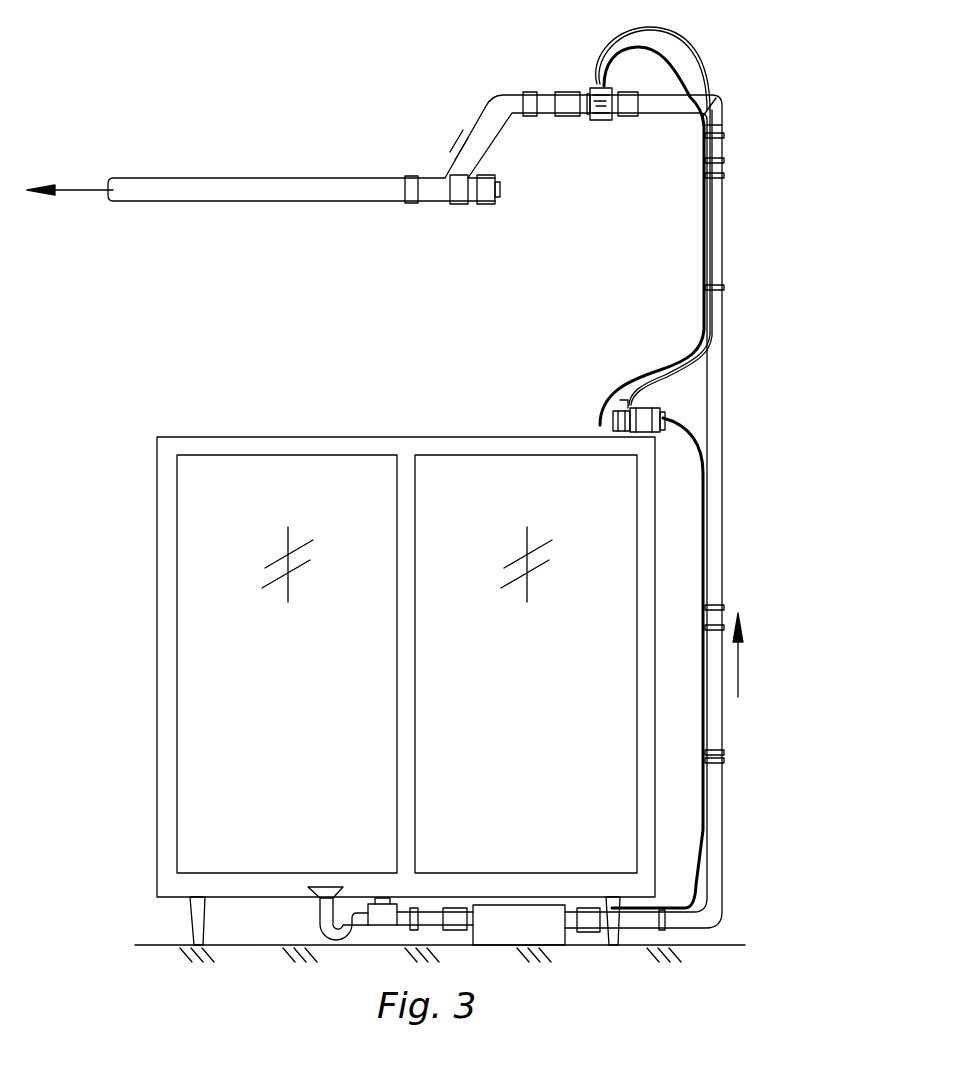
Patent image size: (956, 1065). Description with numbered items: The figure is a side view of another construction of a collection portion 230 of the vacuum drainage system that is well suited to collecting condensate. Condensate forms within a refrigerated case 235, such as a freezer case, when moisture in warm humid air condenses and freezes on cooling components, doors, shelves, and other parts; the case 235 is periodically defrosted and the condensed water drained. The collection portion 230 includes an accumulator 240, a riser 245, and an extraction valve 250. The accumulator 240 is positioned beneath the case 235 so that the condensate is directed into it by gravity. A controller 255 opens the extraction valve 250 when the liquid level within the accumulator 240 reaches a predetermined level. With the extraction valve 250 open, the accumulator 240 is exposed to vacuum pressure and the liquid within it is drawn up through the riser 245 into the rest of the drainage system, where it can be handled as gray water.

The collection portion 230 is at (284, 82).
The refrigerated case 235 is at (244, 440).
The accumulator 240 is at (530, 934).
The riser 245 is at (724, 530).
The extraction valve 250 is at (600, 121).
The controller 255 is at (664, 409).